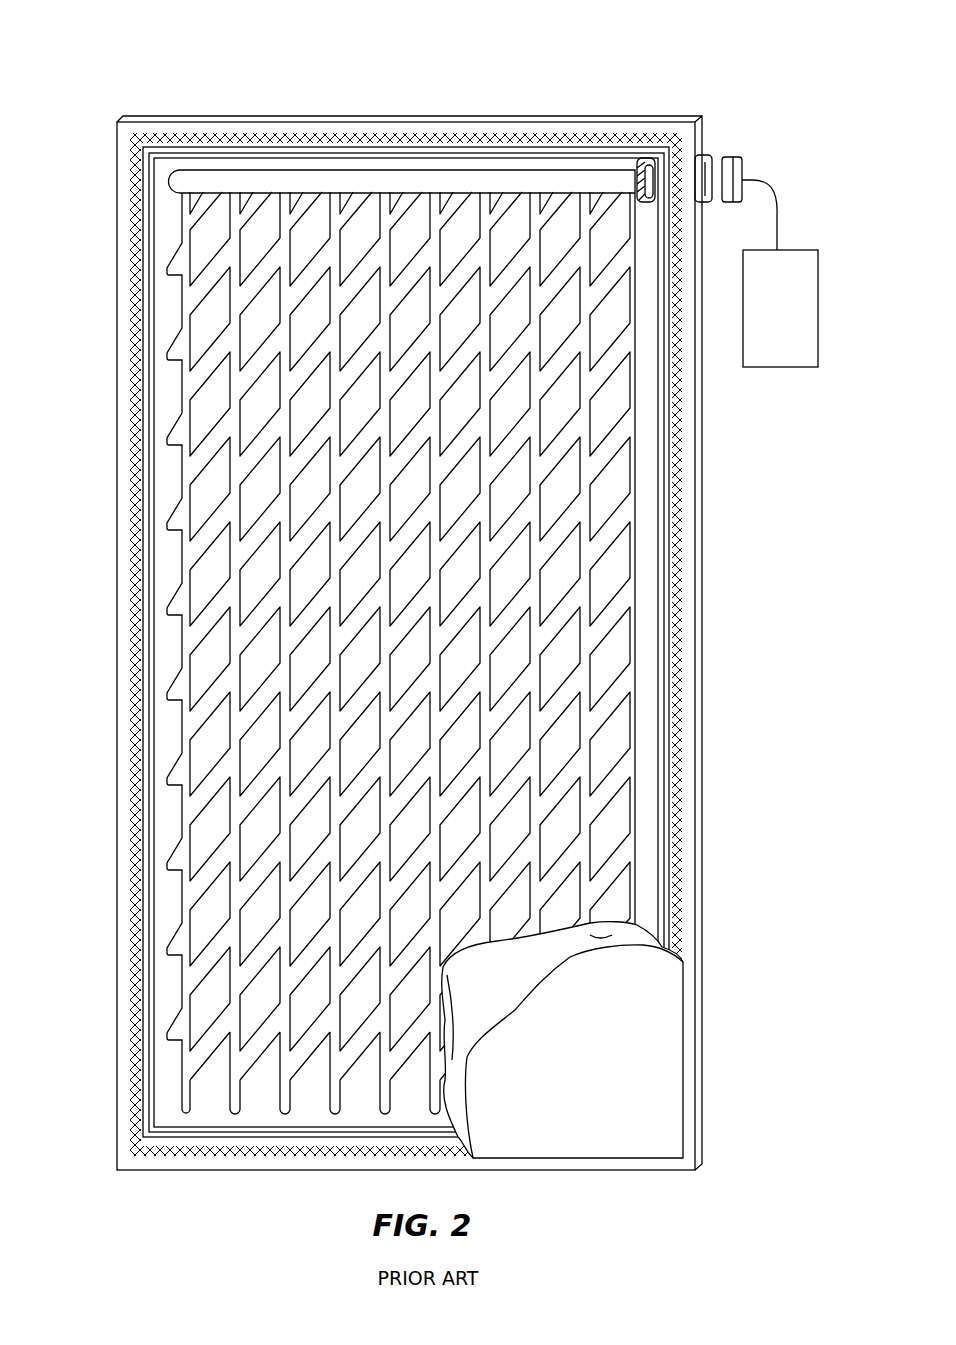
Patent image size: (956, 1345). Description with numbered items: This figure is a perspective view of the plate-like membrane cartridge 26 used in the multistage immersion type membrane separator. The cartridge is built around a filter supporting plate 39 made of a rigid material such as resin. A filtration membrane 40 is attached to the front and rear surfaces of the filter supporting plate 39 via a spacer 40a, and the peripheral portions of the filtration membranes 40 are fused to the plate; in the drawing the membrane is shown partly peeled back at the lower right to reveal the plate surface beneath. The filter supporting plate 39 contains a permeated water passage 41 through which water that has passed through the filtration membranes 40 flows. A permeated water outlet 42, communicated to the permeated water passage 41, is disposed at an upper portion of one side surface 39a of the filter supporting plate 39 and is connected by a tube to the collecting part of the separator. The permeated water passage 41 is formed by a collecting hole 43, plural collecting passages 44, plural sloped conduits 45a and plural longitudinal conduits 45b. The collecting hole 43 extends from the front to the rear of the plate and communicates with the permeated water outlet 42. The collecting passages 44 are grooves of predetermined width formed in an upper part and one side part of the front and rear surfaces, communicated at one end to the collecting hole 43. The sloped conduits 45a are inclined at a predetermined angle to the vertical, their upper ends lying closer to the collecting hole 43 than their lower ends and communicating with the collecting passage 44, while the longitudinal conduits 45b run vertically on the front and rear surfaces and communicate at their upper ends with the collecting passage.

The plate-like membrane cartridge 26 is at (223, 108).
The filter supporting plate 39 is at (168, 210).
The side surface 39a is at (705, 455).
The filtration membrane 40 is at (633, 1058).
The spacer 40a is at (613, 935).
The permeated water passage 41 is at (433, 67).
The permeated water outlet 42 is at (705, 155).
The collecting hole 43 is at (650, 177).
The collecting passage 44 is at (580, 185).
The sloped conduit 45a is at (548, 205).
The longitudinal conduit 45b is at (483, 208).